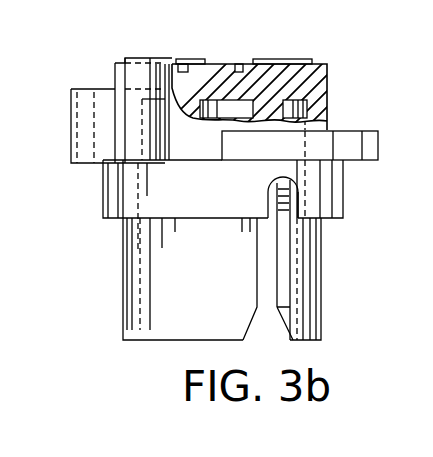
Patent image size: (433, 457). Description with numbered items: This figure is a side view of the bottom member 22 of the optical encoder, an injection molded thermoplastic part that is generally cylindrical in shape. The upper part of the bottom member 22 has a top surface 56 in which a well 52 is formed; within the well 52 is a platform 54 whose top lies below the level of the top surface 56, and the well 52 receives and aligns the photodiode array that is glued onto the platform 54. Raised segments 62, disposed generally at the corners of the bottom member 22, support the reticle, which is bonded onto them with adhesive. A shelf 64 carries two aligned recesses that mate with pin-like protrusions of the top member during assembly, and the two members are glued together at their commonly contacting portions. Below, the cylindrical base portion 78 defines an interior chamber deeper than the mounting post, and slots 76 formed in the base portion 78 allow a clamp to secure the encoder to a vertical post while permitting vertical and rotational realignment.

The bottom member 22 is at (93, 71).
The well 52 is at (174, 62).
The platform 54 is at (213, 63).
The top surface 56 is at (319, 63).
The raised segments 62 is at (283, 60).
The shelf 64 is at (368, 144).
The slots 76 is at (272, 330).
The cylindrical base portion 78 is at (317, 284).